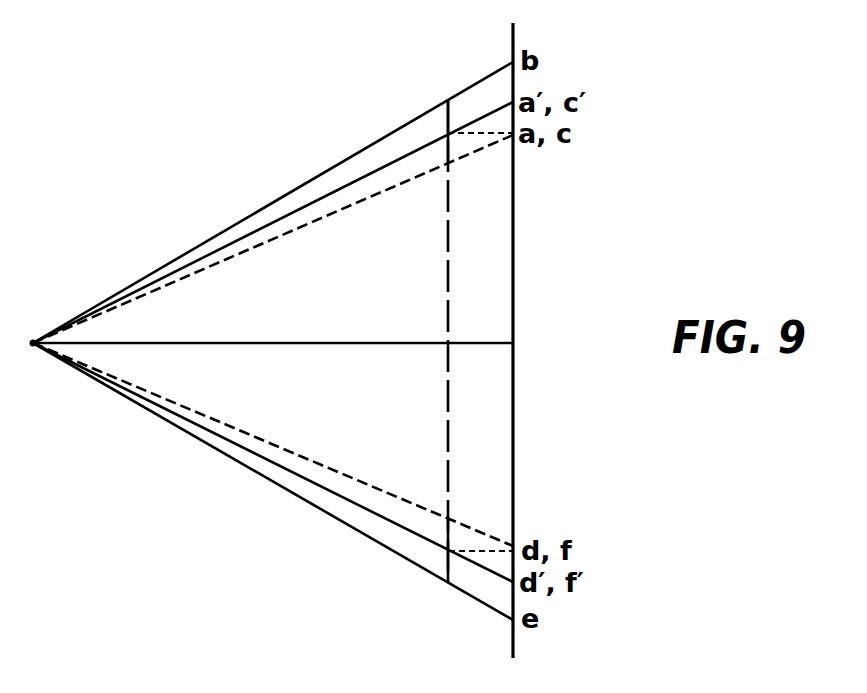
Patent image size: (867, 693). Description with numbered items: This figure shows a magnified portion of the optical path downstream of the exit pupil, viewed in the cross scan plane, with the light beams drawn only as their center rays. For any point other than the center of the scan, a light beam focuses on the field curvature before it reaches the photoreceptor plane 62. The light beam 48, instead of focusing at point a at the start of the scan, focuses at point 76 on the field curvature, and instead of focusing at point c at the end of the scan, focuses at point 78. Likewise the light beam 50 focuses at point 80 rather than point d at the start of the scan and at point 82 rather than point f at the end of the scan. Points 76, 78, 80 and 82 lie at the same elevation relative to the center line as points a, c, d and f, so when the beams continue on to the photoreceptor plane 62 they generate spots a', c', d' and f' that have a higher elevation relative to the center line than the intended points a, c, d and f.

The light beam 48 is at (255, 232).
The light beam 50 is at (257, 453).
The photoreceptor plane 62 is at (515, 292).
The focus point 76 is at (447, 131).
The focus point 78 is at (448, 132).
The focus point 80 is at (449, 551).
The focus point 82 is at (449, 551).